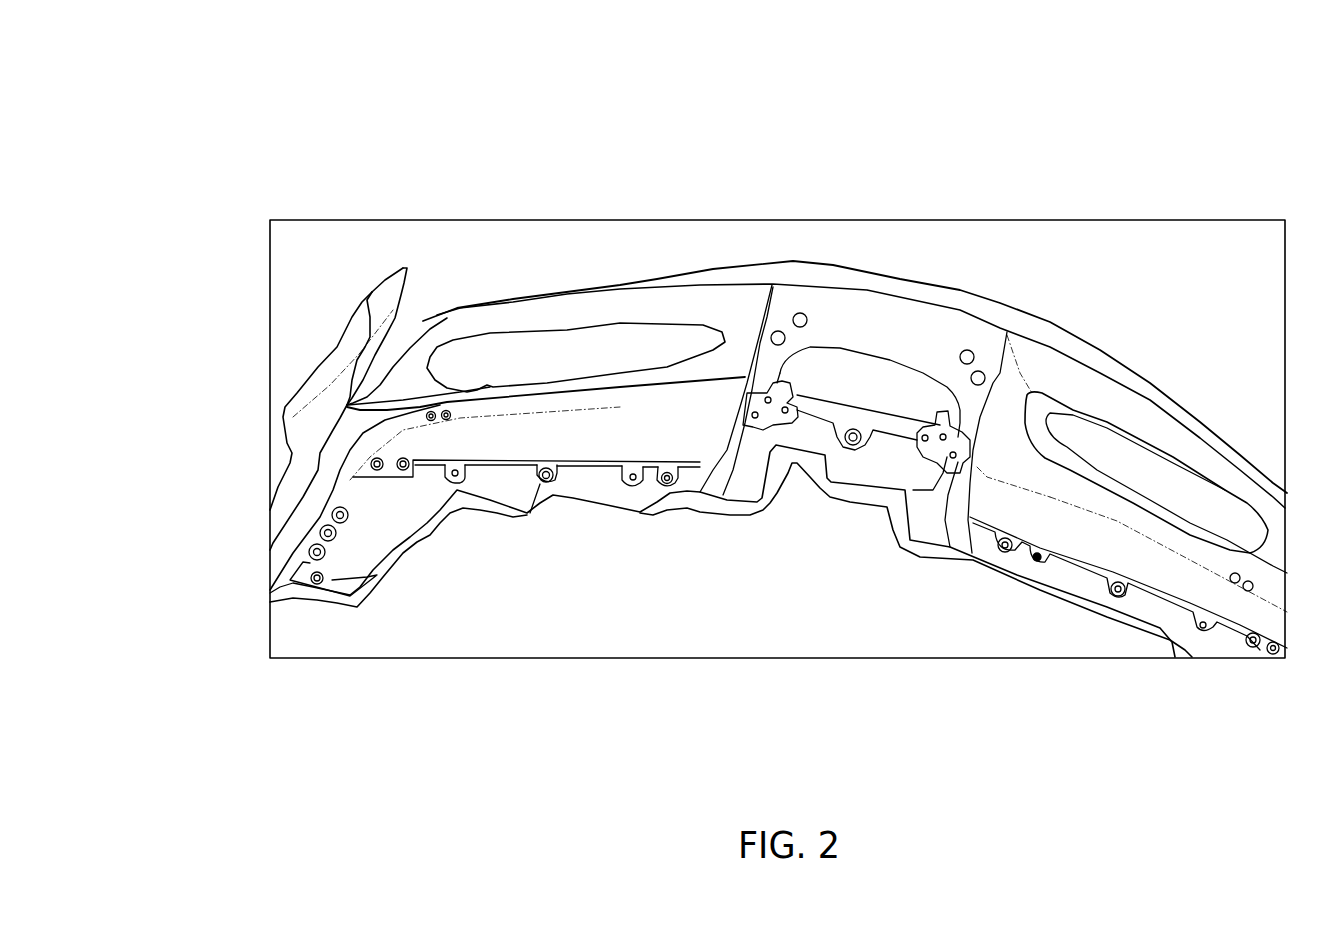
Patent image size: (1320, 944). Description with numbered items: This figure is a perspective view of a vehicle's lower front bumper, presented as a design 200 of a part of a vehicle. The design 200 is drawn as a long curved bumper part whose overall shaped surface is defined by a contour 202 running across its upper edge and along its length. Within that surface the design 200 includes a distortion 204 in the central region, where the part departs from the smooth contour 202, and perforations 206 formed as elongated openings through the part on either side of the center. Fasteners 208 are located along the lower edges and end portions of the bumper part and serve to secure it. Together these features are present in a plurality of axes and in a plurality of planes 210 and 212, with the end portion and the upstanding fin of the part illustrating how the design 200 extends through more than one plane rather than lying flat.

The design 200 is at (225, 86).
The contour 202 is at (900, 285).
The distortion 204 is at (827, 377).
The perforations 206 is at (572, 348).
The fasteners 208 is at (337, 510).
The plane 210 is at (307, 420).
The plane 212 is at (405, 338).